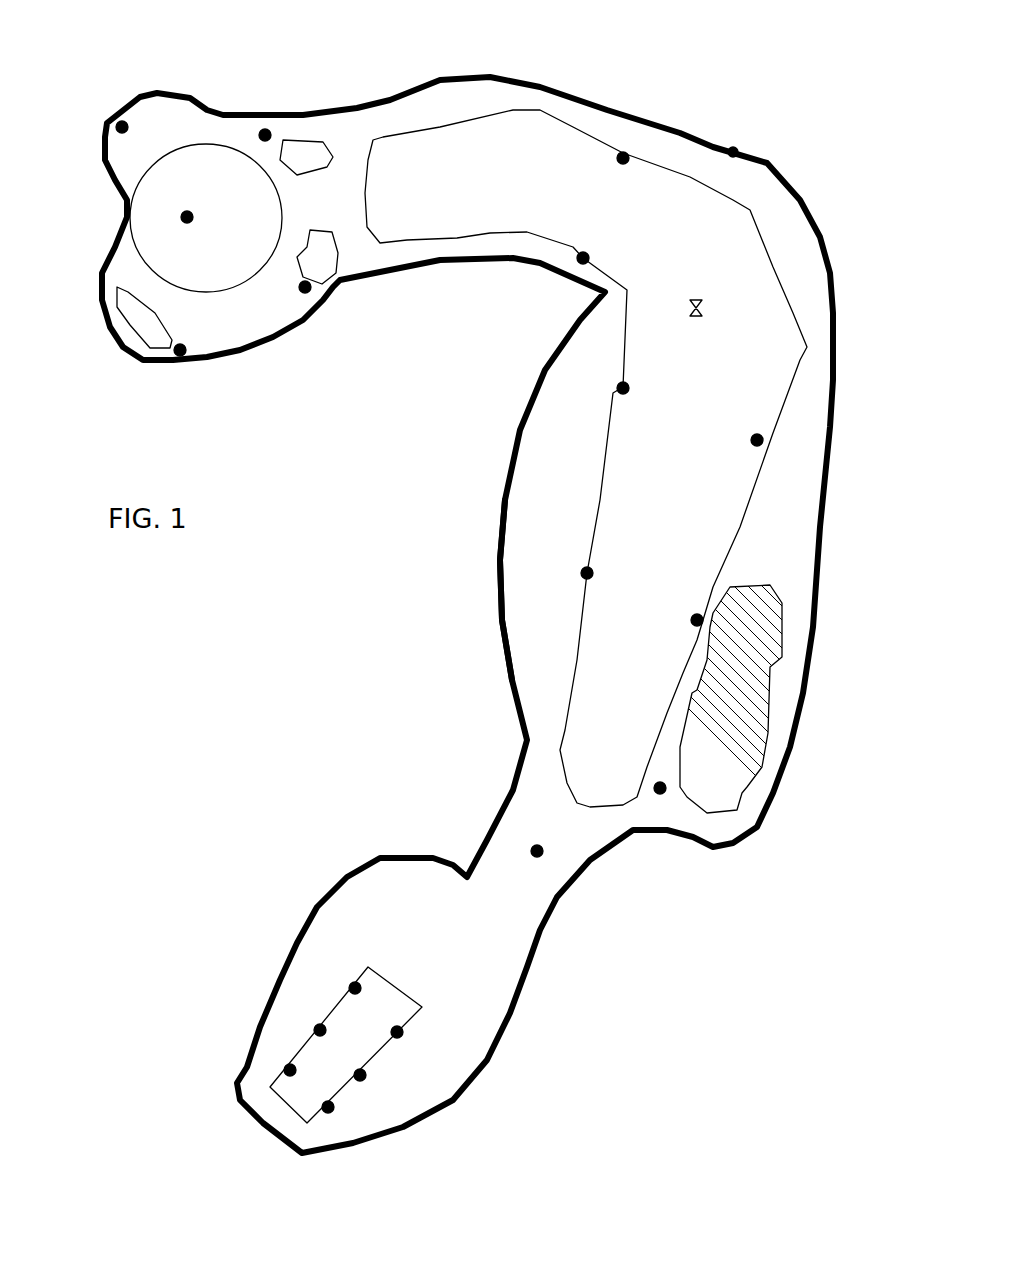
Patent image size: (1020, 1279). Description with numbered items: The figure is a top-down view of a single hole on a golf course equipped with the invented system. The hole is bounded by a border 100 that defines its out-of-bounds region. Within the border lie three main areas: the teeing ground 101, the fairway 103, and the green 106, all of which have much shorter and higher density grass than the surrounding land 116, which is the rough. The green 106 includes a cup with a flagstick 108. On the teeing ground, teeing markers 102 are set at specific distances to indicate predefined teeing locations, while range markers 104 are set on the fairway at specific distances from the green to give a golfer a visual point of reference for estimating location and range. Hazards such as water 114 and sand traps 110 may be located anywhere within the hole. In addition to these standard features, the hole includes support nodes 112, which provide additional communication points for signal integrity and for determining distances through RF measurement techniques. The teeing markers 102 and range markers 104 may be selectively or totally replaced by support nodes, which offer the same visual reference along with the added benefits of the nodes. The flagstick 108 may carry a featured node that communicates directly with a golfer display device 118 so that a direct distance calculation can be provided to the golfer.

The border 100 is at (485, 1060).
The teeing ground 101 is at (383, 977).
The teeing markers 102 is at (352, 987).
The fairway 103 is at (690, 178).
The range markers 104 is at (623, 156).
The green 106 is at (245, 297).
The flagstick 108 is at (186, 217).
The sand traps 110 is at (317, 140).
The support nodes 112 is at (263, 132).
The water 114 is at (743, 797).
The land 116 is at (545, 550).
The golfer display device 118 is at (704, 308).